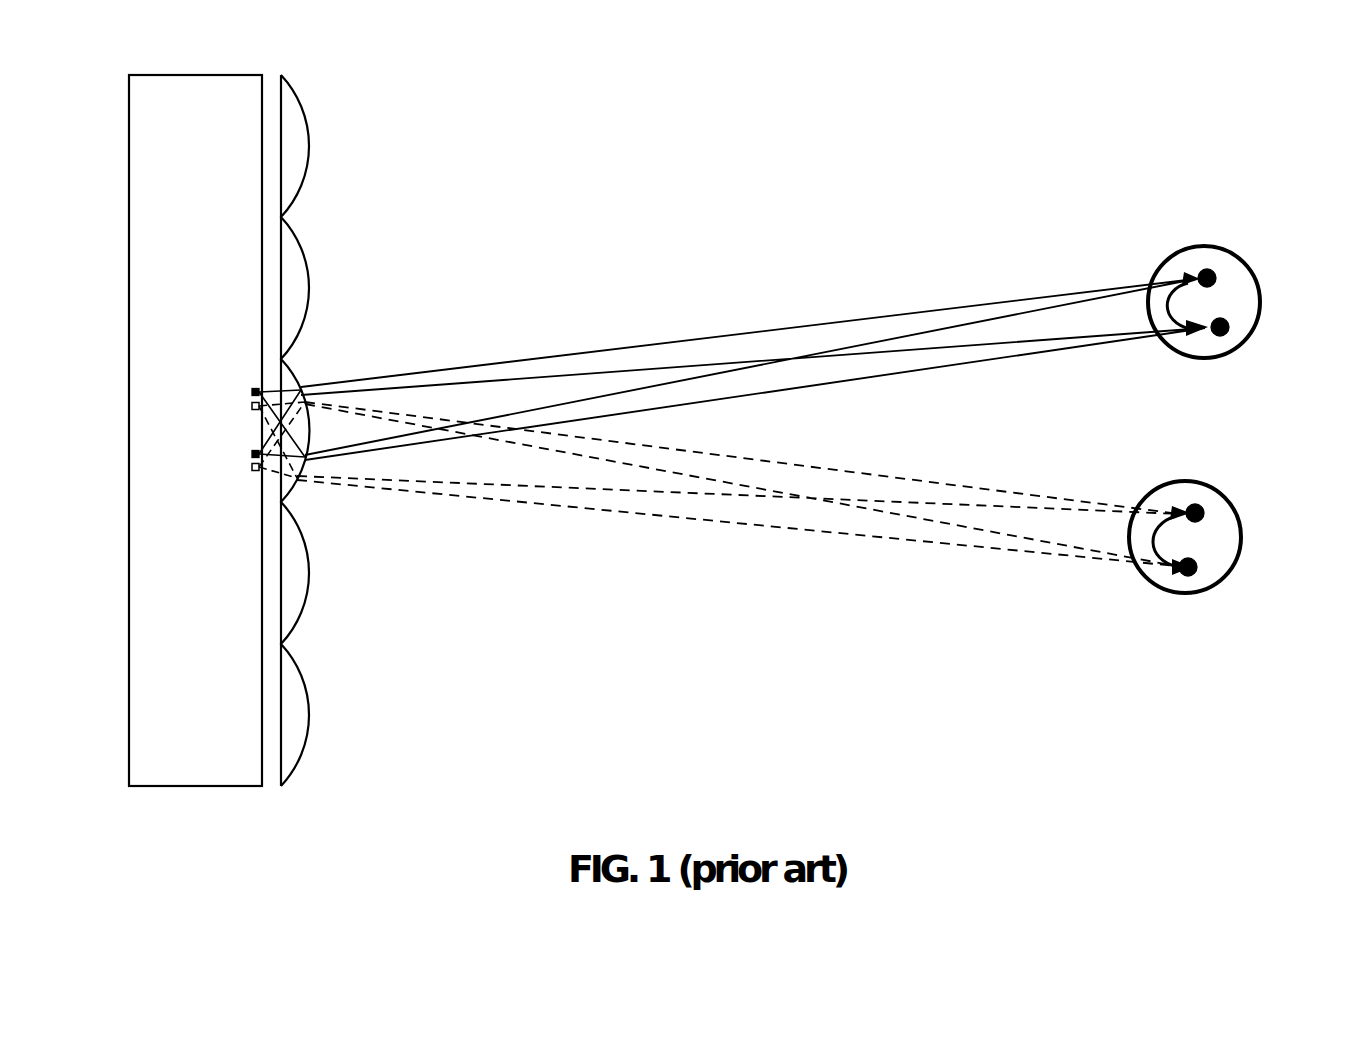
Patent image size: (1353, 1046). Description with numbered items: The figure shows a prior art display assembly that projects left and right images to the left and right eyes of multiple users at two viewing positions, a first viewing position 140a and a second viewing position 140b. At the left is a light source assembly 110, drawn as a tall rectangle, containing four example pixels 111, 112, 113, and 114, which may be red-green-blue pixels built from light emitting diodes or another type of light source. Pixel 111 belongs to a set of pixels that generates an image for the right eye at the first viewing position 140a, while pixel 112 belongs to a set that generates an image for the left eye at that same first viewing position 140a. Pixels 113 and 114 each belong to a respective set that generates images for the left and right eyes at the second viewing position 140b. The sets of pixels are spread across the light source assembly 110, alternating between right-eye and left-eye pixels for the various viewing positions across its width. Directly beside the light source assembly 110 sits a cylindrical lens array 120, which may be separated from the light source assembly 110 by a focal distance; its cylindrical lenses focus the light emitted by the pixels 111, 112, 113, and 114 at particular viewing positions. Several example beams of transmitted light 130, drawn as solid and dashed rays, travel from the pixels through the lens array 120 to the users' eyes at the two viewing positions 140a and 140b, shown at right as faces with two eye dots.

The light source assembly 110 is at (176, 201).
The pixel 111 is at (247, 388).
The pixel 112 is at (247, 403).
The pixel 113 is at (247, 452).
The pixel 114 is at (247, 470).
The cylindrical lens array 120 is at (348, 62).
The transmitted light 130 is at (873, 272).
The viewing position 1 140a is at (1184, 579).
The viewing position 2 140b is at (1184, 334).